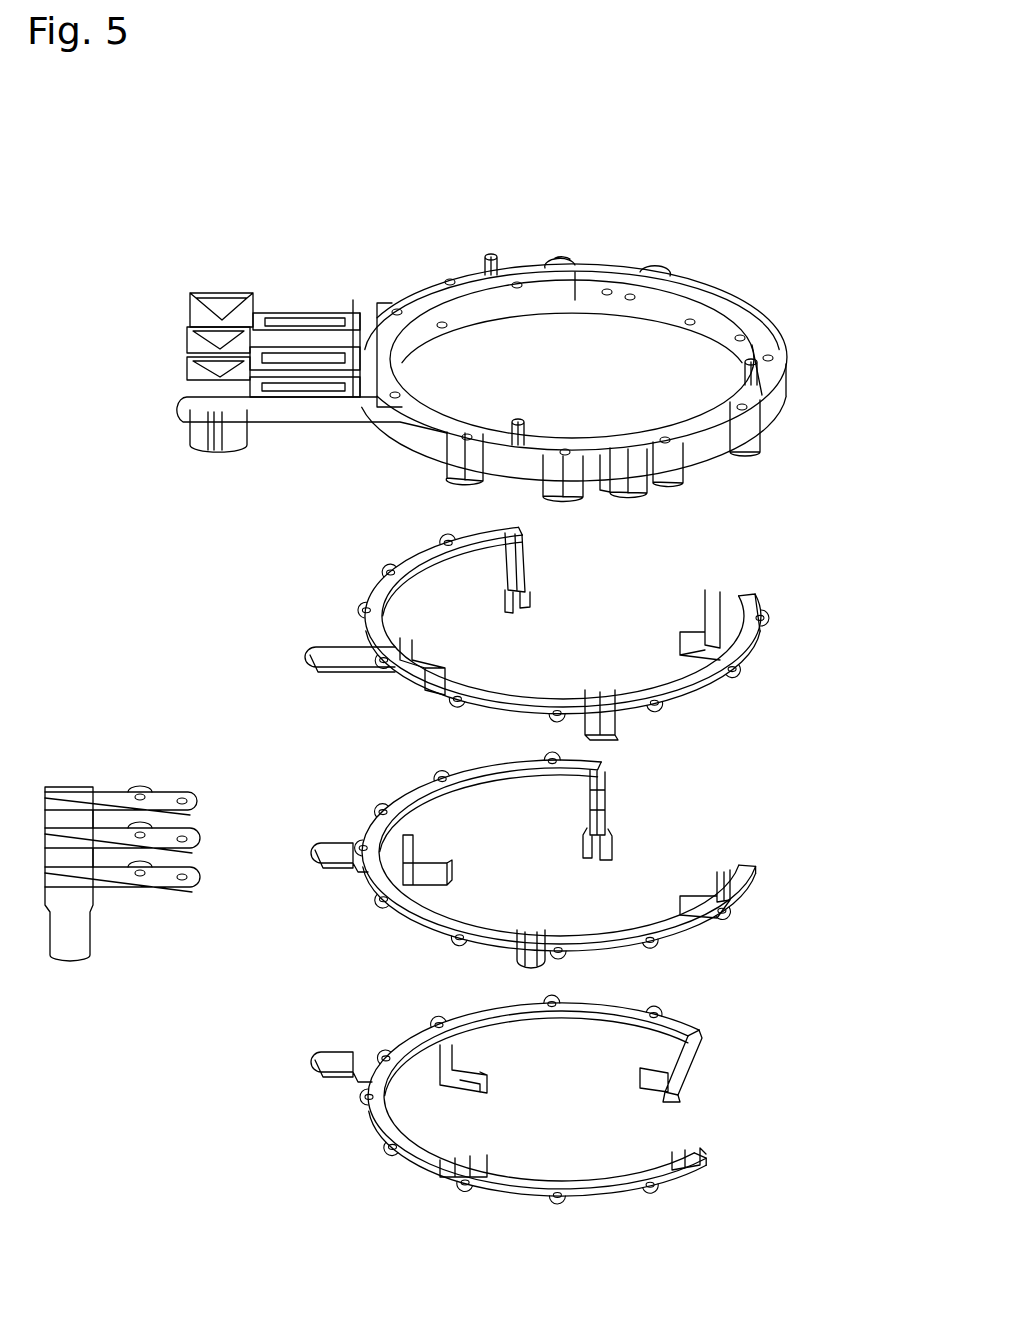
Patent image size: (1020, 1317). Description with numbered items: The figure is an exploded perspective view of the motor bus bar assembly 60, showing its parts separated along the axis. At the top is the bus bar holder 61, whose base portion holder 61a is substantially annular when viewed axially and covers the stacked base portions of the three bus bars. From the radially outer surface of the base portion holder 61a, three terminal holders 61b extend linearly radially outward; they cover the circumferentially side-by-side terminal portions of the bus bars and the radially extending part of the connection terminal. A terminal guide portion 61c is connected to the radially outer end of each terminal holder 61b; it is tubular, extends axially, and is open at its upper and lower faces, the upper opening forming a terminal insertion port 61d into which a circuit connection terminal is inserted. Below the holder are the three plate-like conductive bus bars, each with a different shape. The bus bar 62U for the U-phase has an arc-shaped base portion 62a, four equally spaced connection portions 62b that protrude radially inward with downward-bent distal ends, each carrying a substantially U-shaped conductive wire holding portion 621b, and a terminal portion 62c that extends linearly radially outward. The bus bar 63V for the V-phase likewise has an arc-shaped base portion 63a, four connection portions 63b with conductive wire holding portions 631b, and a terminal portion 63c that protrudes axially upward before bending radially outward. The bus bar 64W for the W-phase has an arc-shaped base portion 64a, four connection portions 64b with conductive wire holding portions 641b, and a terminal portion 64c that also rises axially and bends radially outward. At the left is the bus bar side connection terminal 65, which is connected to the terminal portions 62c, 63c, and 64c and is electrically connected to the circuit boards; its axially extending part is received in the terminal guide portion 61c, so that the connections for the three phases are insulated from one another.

The bus bar assembly 60 is at (654, 207).
The bus bar holder 61 is at (420, 293).
The base portion holder 61a is at (442, 277).
The terminal holder 61b is at (328, 357).
The terminal guide portion 61c is at (180, 380).
The terminal insertion port 61d is at (230, 292).
The base portion 62a is at (378, 582).
The connection portion 62b is at (518, 535).
The terminal portion 62c is at (323, 653).
The bus bar 62U is at (750, 584).
The conductive wire holding portion 621b is at (535, 599).
The base portion 63a is at (405, 913).
The connection portion 63b is at (413, 840).
The terminal portion 63c is at (345, 843).
The bus bar 63V is at (667, 937).
The conductive wire holding portion 631b is at (610, 831).
The base portion 64a is at (370, 1125).
The connection portion 64b is at (450, 1062).
The terminal portion 64c is at (312, 1062).
The bus bar 64W is at (650, 1195).
The conductive wire holding portion 641b is at (673, 1093).
The bus bar side connection terminal 65 is at (110, 790).